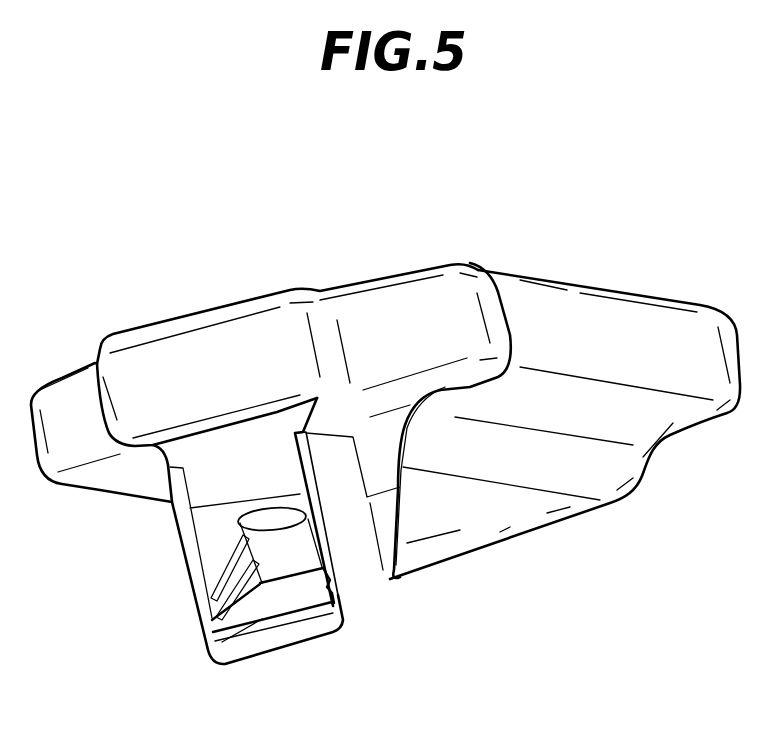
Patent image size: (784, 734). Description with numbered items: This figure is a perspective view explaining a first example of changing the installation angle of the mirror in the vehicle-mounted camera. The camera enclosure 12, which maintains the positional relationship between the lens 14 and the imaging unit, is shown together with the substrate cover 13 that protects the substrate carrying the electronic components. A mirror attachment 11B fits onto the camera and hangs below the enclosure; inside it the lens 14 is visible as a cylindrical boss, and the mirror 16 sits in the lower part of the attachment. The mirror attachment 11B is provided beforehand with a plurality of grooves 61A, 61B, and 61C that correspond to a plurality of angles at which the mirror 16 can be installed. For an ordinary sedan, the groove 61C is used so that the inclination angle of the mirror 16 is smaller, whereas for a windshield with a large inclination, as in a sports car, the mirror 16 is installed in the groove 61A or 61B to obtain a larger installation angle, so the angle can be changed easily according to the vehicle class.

The camera enclosure 12 is at (221, 351).
The substrate cover 13 is at (625, 334).
The mirror attachment 11B is at (350, 577).
The lens 14 is at (258, 512).
The groove 61A is at (230, 563).
The groove 61B is at (217, 590).
The groove 61C is at (213, 627).
The mirror 16 is at (287, 597).